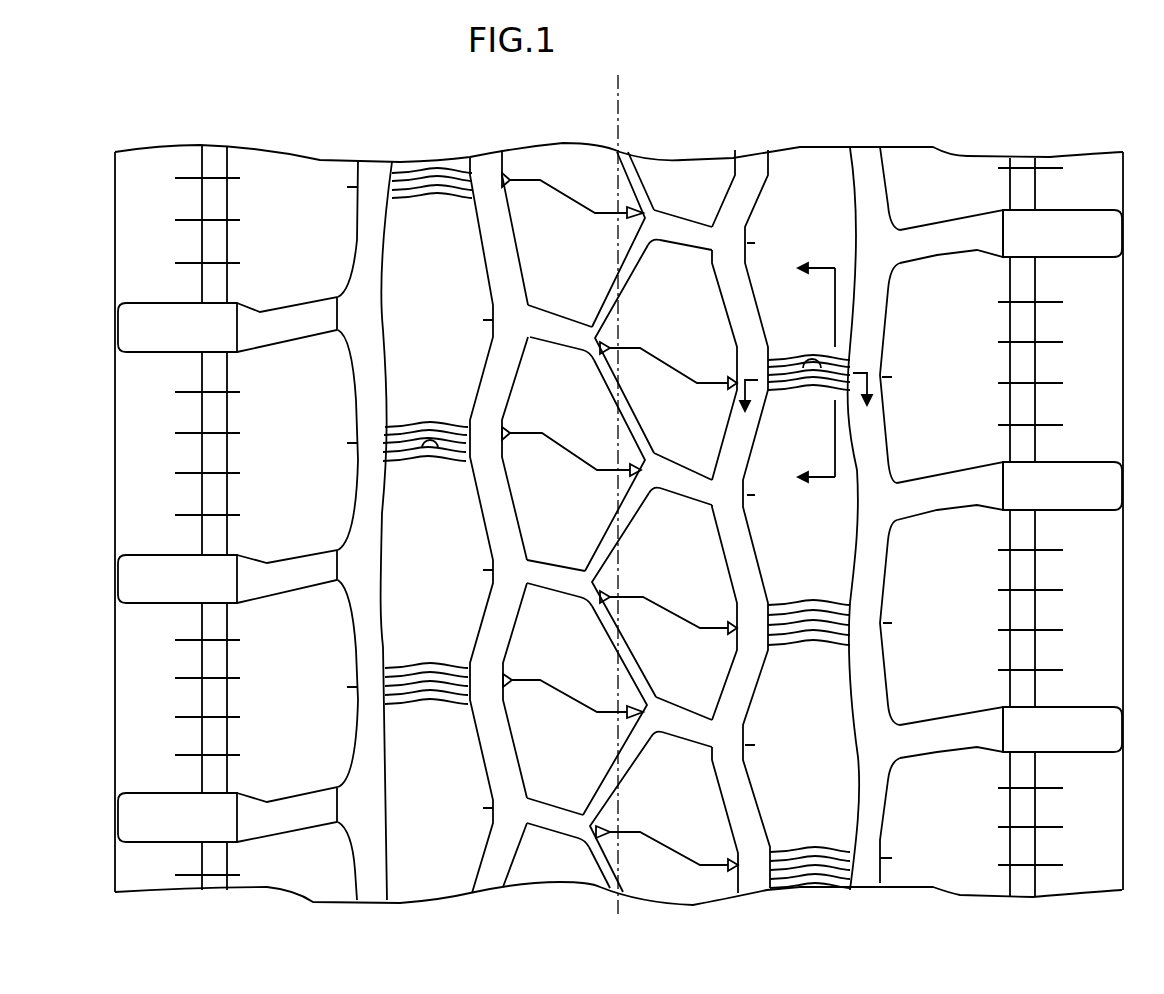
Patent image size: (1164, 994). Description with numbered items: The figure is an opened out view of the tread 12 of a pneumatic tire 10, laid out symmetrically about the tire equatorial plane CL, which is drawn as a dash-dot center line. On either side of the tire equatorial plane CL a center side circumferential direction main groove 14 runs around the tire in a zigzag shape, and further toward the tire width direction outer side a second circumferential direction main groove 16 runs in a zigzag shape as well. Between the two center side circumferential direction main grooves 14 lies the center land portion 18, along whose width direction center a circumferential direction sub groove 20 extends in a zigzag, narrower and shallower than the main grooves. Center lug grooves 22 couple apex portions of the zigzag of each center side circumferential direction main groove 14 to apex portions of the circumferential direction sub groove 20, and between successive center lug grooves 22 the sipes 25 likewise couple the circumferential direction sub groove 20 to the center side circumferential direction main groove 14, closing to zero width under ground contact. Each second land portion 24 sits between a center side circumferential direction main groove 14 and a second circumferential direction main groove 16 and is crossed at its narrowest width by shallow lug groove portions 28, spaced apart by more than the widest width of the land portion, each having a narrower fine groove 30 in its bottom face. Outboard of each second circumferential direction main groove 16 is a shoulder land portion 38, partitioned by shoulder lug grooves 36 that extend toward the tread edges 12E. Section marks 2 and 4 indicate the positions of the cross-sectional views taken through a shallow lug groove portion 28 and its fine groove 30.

The pneumatic tire 10 is at (983, 108).
The tread 12 is at (795, 146).
The tread edges 12E is at (220, 160).
The center side circumferential direction main groove 14 is at (490, 180).
The second circumferential direction main groove 16 is at (375, 180).
The center land portion 18 is at (620, 488).
The circumferential direction sub groove 20 is at (624, 152).
The center lug groove 22 is at (670, 235).
The second land portion 24 is at (621, 483).
The sipe 25 is at (657, 365).
The shallow lug groove portion 28 is at (432, 425).
The fine groove 30 is at (430, 460).
The shoulder lug groove 36 is at (290, 330).
The shoulder land portion 38 is at (620, 488).
The section line 2 is at (803, 409).
The section line 4 is at (806, 374).
The tire equatorial plane CL is at (620, 92).